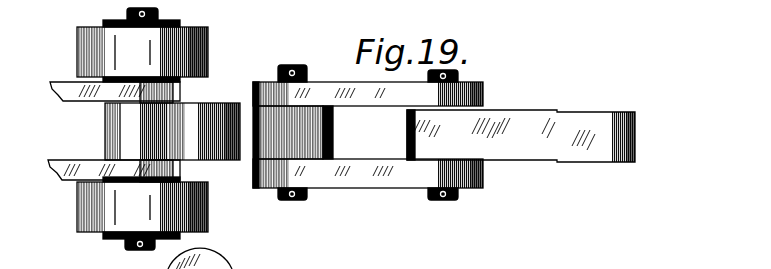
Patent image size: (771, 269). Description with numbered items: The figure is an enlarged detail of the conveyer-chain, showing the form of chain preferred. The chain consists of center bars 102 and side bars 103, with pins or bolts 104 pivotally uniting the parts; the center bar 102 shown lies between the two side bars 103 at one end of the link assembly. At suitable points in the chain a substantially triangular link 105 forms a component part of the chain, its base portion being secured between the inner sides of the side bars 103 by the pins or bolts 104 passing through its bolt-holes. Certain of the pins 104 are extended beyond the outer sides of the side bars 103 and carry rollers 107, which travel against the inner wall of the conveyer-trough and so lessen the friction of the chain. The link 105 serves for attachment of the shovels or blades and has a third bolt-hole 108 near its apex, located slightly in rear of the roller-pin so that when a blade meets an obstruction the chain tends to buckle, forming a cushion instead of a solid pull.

The center bar 102 is at (535, 120).
The side bar 103 is at (358, 176).
The pin or bolt 104 is at (290, 197).
The link 105 is at (197, 108).
The roller 107 is at (204, 57).
The third bolt-hole 108 is at (221, 258).